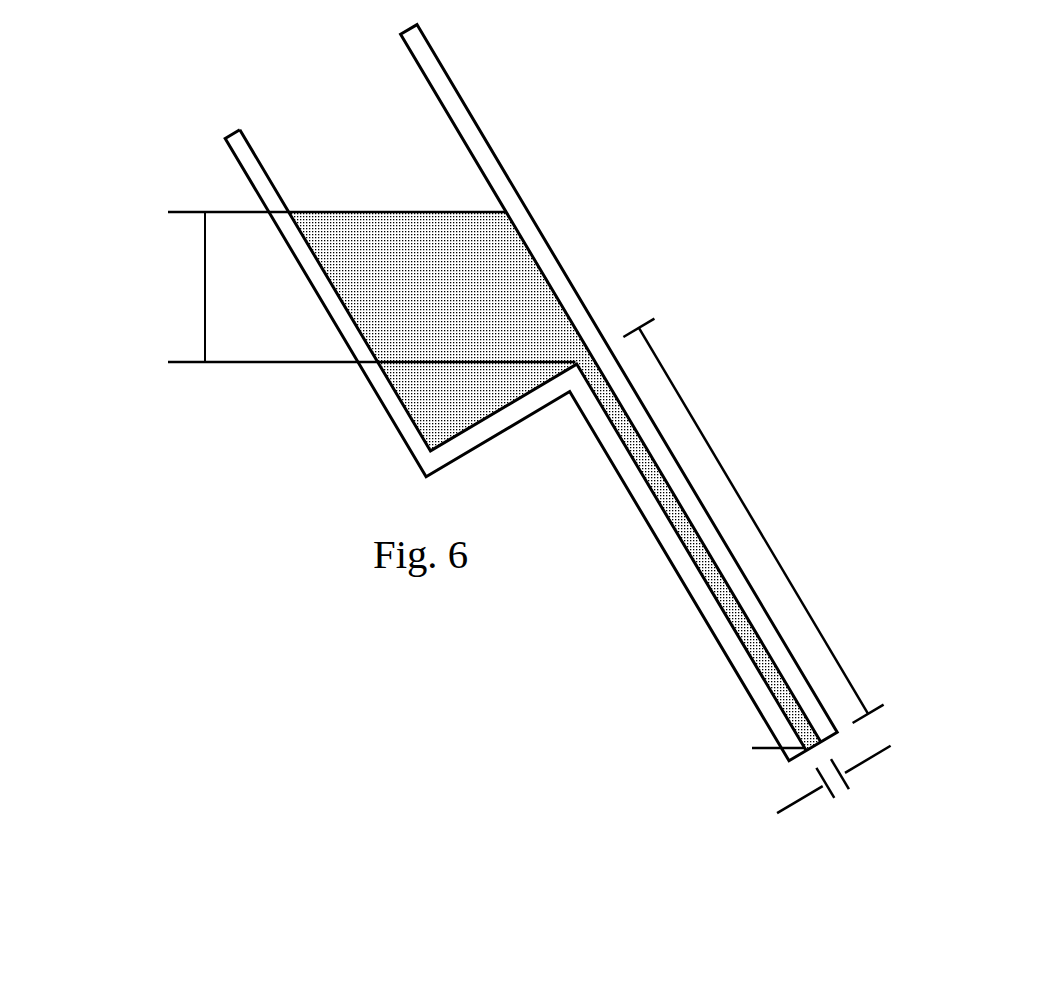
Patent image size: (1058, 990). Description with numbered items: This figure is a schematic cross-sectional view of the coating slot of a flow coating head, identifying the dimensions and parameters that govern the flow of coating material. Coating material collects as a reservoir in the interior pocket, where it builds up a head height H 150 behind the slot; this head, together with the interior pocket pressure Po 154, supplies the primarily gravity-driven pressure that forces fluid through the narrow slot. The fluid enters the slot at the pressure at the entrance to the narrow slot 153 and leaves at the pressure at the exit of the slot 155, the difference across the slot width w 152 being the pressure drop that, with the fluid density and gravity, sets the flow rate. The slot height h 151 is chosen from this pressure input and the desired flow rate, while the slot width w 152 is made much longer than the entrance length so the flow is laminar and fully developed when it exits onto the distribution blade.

The head height H 150 is at (131, 310).
The slot height h 151 is at (812, 813).
The slot width w 152 is at (830, 505).
The pressure at the entrance to the narrow slot P1 153 is at (566, 305).
The interior pocket pressure Po 154 is at (373, 138).
The pressure at the exit of the slot P2 155 is at (690, 746).